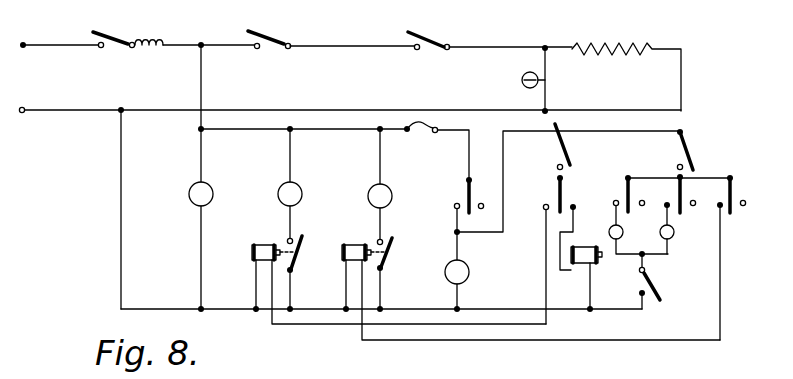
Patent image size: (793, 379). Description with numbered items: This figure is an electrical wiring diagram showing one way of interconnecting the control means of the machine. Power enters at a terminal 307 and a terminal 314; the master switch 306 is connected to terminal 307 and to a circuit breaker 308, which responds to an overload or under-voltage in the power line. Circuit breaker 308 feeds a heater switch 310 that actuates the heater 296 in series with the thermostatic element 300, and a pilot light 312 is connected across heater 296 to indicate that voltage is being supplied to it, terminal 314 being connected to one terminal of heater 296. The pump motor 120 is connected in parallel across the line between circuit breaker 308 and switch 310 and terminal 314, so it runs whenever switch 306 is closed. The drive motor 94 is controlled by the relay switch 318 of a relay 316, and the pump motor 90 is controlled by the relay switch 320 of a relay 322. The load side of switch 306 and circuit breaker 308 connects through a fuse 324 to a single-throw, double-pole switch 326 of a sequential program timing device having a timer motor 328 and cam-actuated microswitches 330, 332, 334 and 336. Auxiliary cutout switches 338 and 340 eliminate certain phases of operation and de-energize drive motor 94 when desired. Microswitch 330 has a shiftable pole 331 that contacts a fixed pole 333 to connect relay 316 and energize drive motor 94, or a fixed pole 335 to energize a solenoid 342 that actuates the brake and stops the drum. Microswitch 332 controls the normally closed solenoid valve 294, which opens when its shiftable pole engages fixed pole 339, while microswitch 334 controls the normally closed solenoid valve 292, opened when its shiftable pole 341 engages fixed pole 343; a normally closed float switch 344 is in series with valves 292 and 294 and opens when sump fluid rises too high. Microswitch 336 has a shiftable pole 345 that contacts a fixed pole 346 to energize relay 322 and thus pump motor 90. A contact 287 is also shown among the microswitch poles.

The terminal 307 is at (26, 44).
The master switch 306 is at (106, 36).
The circuit breaker 308 is at (160, 52).
The heater switch 310 is at (274, 37).
The thermostatic element 300 is at (436, 38).
The heater 296 is at (606, 46).
The terminal 314 is at (23, 109).
The pilot light 312 is at (522, 80).
The pump motor 120 is at (192, 208).
The drive motor 94 is at (278, 200).
The pump motor 90 is at (368, 200).
The relay 316 is at (252, 256).
The relay switch 318 is at (295, 258).
The relay 322 is at (343, 245).
The relay switch 320 is at (388, 258).
The fuse 324 is at (410, 139).
The single-throw, double-pole switch 326 is at (467, 196).
The timer motor 328 is at (470, 272).
The cutout switch 338 is at (568, 144).
The cutout switch 340 is at (694, 142).
The microswitch 330 is at (546, 203).
The shiftable pole 331 is at (564, 186).
The fixed pole 333 is at (546, 210).
The fixed pole 335 is at (574, 207).
The solenoid 342 is at (584, 265).
The microswitch 332 is at (628, 178).
The microswitch 334 is at (678, 174).
The microswitch 336 is at (744, 199).
The contact 287 is at (647, 194).
The shiftable pole 341 is at (694, 201).
The fixed pole 339 is at (612, 200).
The fixed pole 343 is at (667, 208).
The solenoid valve 294 is at (624, 238).
The solenoid valve 292 is at (674, 238).
The float switch 344 is at (660, 281).
The fixed pole 346 is at (720, 208).
The shiftable pole 345 is at (745, 208).